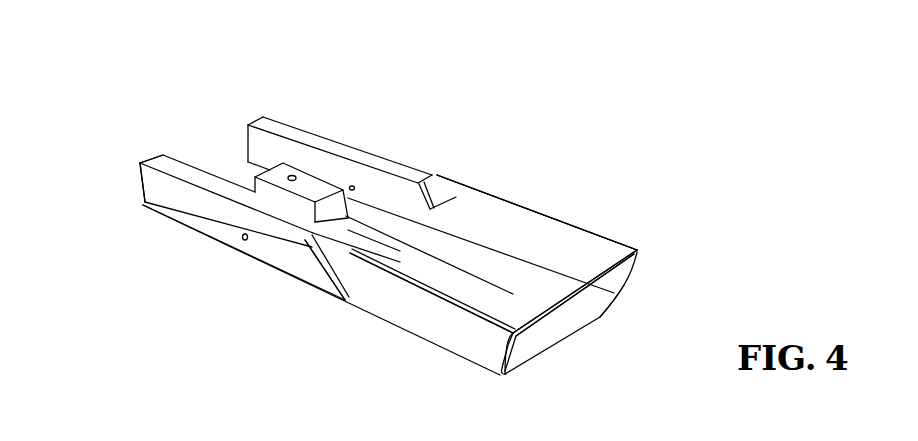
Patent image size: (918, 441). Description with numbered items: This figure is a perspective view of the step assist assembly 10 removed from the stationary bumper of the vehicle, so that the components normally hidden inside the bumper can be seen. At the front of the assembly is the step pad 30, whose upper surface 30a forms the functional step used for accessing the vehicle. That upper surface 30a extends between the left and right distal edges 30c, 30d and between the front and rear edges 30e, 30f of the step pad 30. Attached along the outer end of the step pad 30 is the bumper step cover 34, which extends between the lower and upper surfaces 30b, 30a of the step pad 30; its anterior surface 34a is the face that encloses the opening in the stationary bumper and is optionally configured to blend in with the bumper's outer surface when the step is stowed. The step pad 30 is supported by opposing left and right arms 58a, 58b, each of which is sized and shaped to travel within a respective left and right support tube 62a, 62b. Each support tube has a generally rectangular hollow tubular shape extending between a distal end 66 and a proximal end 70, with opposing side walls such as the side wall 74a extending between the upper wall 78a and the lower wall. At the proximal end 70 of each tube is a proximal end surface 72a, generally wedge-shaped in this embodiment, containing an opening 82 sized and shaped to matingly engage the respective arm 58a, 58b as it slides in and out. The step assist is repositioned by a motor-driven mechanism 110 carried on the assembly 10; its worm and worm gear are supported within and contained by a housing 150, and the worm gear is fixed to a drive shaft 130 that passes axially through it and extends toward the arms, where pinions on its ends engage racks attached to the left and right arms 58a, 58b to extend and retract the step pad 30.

The step assist assembly 10 is at (549, 142).
The step pad 30 is at (523, 243).
The upper surface 30a is at (481, 245).
The lower surface 30b is at (537, 362).
The left distal edge 30c is at (460, 305).
The right distal edge 30d is at (594, 237).
The front edge 30e is at (583, 266).
The rear edge 30f is at (415, 222).
The bumper step cover 34 is at (573, 317).
The anterior surface 34a is at (627, 274).
The left arm 58a is at (408, 310).
The right arm 58b is at (449, 188).
The left support tube 62a is at (182, 207).
The right support tube 62b is at (362, 157).
The distal end 66 is at (152, 157).
The proximal end 70 is at (344, 298).
The proximal end surface 72a is at (324, 266).
The side wall 74a is at (158, 183).
The upper wall 78a is at (175, 168).
The opening 82 is at (352, 292).
The motor-driven mechanism 110 is at (290, 163).
The drive shaft 130 is at (362, 192).
The housing 150 is at (302, 182).